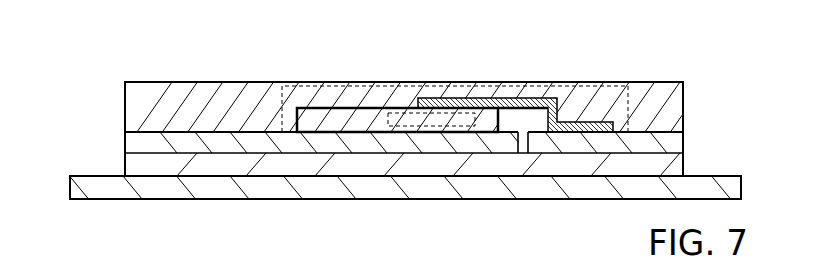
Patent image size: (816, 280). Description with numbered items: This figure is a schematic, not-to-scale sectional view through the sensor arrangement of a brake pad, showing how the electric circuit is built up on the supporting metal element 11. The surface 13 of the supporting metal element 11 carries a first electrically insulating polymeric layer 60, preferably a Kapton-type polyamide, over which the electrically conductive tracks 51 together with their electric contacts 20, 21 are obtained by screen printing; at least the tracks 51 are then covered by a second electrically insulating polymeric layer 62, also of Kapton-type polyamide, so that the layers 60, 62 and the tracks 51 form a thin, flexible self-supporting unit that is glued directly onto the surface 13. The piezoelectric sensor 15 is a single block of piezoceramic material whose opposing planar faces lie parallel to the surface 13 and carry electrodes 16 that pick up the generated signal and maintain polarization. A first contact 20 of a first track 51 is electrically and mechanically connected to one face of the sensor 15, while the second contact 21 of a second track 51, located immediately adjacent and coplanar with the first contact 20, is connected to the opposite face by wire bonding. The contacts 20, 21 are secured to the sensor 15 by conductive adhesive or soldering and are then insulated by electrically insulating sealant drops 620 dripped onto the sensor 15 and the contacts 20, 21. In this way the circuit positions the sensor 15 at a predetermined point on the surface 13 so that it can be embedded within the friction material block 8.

The semiconductor module 8 is at (710, 100).
The surface 13 is at (726, 169).
The supporting metal element 11 is at (420, 188).
The first electrically insulating polymeric layer 60 is at (217, 168).
The electrically conductive tracks 51 is at (140, 143).
The second electrically insulating polymeric layer 62 is at (165, 90).
The piezoelectric sensor 15 is at (304, 95).
The electrically insulating sealant drops 620 is at (630, 96).
The electrodes 16 is at (407, 106).
The second electric contact 21 is at (673, 143).
The first electric contact 20 is at (493, 143).